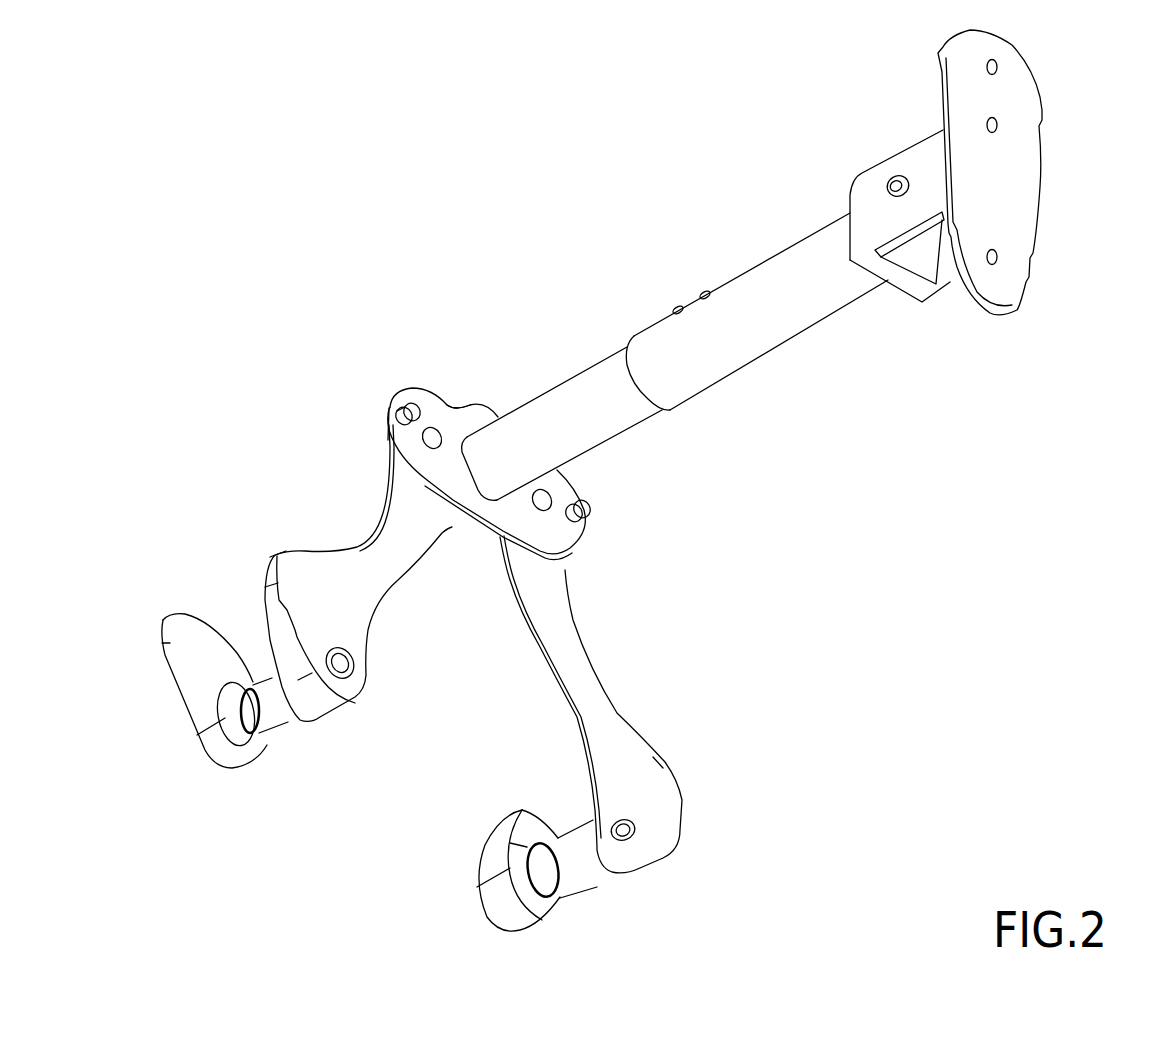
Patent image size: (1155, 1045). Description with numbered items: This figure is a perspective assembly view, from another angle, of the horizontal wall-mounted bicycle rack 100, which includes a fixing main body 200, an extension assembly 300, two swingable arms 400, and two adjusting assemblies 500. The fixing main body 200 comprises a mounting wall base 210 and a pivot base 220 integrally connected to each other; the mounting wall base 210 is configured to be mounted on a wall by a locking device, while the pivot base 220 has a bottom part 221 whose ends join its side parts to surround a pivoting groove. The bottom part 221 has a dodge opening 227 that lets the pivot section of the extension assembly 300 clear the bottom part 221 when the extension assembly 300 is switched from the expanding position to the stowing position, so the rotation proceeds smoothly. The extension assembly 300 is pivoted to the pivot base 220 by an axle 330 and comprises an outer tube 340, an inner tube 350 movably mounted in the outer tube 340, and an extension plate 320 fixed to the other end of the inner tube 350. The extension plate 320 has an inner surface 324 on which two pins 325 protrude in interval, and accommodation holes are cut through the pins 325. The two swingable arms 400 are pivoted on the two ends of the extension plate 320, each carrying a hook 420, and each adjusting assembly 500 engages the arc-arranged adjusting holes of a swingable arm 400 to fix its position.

The horizontal wall-mounted bicycle rack 100 is at (500, 176).
The fixing main body 200 is at (1048, 209).
The mounting wall base 210 is at (1038, 81).
The pivot base 220 is at (848, 183).
The bottom part 221 is at (903, 278).
The dodge opening 227 is at (941, 268).
The extension assembly 300 is at (737, 405).
The extension plate 320 is at (477, 398).
The inner surface 324 is at (448, 402).
The pin 325 is at (397, 413).
The axle 330 is at (897, 176).
The outer tube 340 is at (745, 268).
The inner tube 350 is at (570, 390).
The swingable arm 400 is at (392, 592).
The hook 420 is at (280, 720).
The adjusting assembly 500 is at (404, 400).